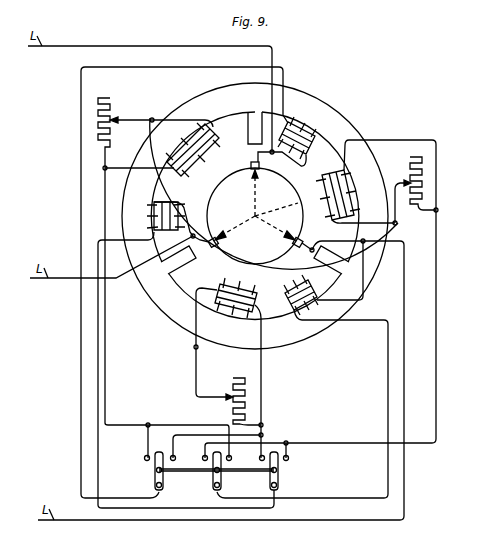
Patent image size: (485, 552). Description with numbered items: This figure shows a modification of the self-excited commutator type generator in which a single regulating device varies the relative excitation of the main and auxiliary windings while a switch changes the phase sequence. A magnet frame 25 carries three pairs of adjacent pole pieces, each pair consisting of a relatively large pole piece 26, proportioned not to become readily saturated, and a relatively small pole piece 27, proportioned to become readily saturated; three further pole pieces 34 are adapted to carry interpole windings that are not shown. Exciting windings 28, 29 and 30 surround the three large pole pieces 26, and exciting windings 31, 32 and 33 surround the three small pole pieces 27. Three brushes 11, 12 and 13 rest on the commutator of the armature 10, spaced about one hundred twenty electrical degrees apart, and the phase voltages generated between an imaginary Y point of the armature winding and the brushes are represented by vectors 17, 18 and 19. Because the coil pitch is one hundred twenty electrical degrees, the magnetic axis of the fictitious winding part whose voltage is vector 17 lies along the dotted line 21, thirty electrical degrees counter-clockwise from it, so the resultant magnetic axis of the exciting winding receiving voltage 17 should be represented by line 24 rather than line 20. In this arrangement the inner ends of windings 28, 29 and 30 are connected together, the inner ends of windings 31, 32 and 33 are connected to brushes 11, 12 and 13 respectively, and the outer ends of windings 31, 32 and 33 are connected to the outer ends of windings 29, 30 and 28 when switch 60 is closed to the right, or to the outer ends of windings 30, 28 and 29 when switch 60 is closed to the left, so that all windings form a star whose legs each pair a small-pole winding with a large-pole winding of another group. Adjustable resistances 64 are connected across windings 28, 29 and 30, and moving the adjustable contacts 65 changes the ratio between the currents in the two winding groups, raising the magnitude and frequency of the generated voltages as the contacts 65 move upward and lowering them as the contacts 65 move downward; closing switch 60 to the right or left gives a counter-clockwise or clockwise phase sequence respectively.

The rotor 10 is at (209, 196).
The brush 11 is at (251, 164).
The brush 12 is at (304, 241).
The brush 13 is at (212, 246).
The voltage vector 17 is at (263, 193).
The voltage vector 18 is at (235, 232).
The voltage vector 19 is at (283, 233).
The resultant magnetic axis line 20 is at (278, 228).
The magnetic axis dotted line 21 is at (246, 198).
The resultant magnetic axis line 24 is at (279, 208).
The magnet frame 25 is at (199, 99).
The large pole piece 26 is at (210, 164).
The small pole piece 27 is at (309, 136).
The exciting winding 28 is at (350, 186).
The exciting winding 29 is at (224, 309).
The exciting winding 30 is at (190, 145).
The exciting winding 31 is at (296, 125).
The exciting winding 32 is at (302, 310).
The exciting winding 33 is at (154, 216).
The interpole pole piece 34 is at (250, 136).
The switch 60 is at (279, 478).
The adjustable resistance 64 is at (104, 100).
The adjustable contact 65 is at (116, 121).